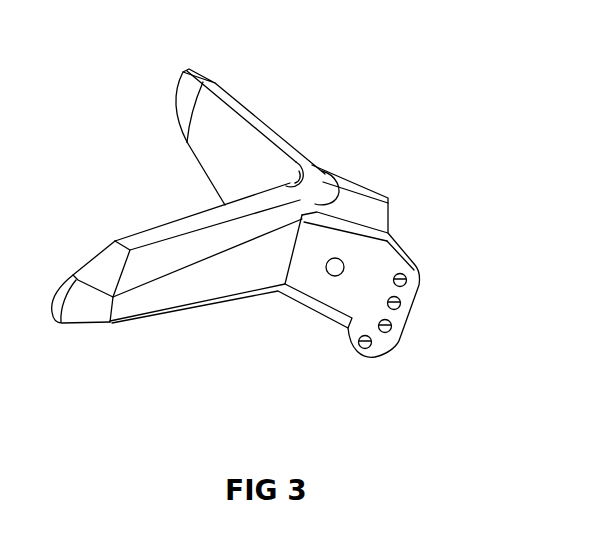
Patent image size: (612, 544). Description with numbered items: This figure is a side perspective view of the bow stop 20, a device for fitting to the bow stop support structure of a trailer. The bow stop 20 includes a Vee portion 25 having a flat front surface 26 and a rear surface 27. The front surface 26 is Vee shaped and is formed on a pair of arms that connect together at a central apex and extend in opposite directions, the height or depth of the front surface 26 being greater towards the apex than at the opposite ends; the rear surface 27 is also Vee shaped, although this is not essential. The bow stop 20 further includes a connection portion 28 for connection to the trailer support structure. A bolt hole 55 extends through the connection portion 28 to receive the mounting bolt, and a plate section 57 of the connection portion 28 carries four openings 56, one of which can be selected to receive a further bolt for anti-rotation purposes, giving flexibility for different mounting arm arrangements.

The bow stop 20 is at (372, 118).
The Vee portion 25 is at (220, 119).
The front surface 26 is at (213, 130).
The rear surface 27 is at (193, 287).
The connection portion 28 is at (382, 217).
The bolt hole 55 is at (332, 273).
The openings 56 is at (367, 345).
The plate section 57 is at (400, 307).